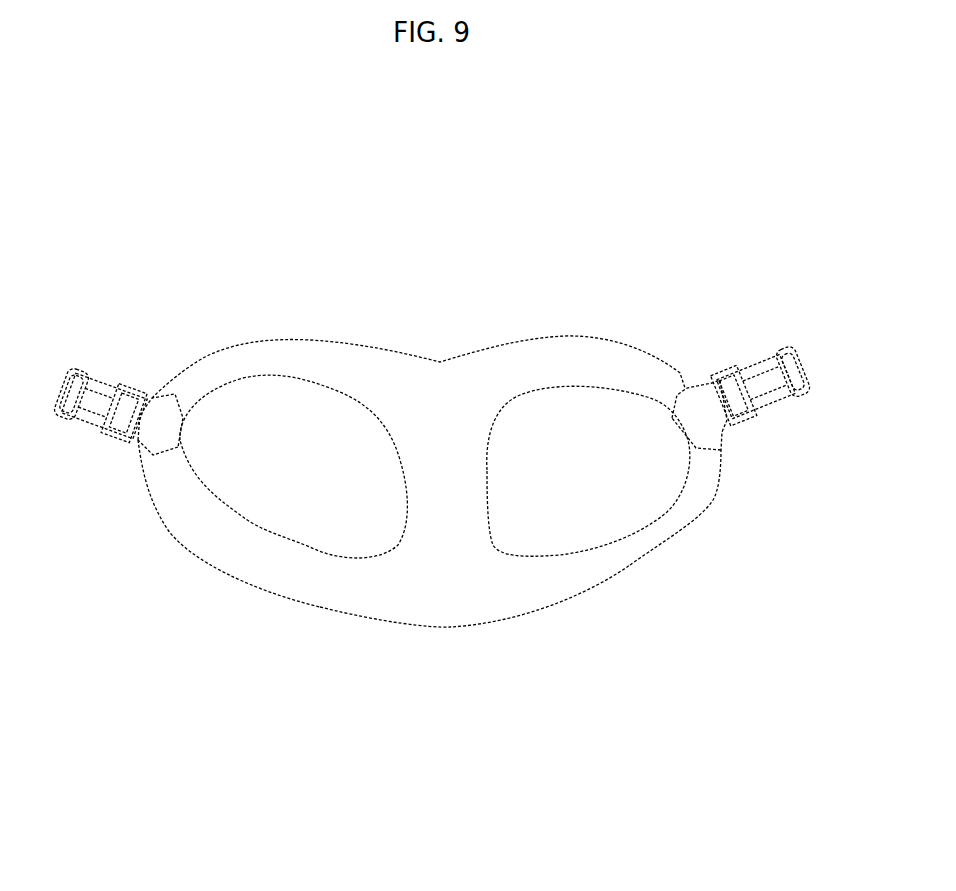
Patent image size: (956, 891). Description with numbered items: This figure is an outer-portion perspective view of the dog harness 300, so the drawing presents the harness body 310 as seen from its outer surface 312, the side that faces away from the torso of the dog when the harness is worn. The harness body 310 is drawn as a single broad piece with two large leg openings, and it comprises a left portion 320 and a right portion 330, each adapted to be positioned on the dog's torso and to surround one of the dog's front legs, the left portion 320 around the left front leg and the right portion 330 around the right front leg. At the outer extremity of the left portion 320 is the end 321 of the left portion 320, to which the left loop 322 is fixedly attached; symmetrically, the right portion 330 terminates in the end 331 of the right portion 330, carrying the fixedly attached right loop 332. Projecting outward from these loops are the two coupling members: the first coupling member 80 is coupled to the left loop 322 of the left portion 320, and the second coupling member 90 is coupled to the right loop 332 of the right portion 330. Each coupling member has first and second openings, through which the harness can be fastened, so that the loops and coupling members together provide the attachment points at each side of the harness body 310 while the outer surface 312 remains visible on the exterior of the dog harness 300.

The dog harness 300 is at (137, 161).
The harness body 310 is at (455, 630).
The outer surface 312 is at (523, 583).
The left portion 320 is at (183, 508).
The end of the left portion 321 is at (147, 458).
The left loop 322 is at (155, 413).
The right portion 330 is at (657, 530).
The end of the right portion 331 is at (720, 457).
The right loop 332 is at (694, 400).
The first coupling member 80 is at (127, 437).
The second coupling member 90 is at (720, 382).